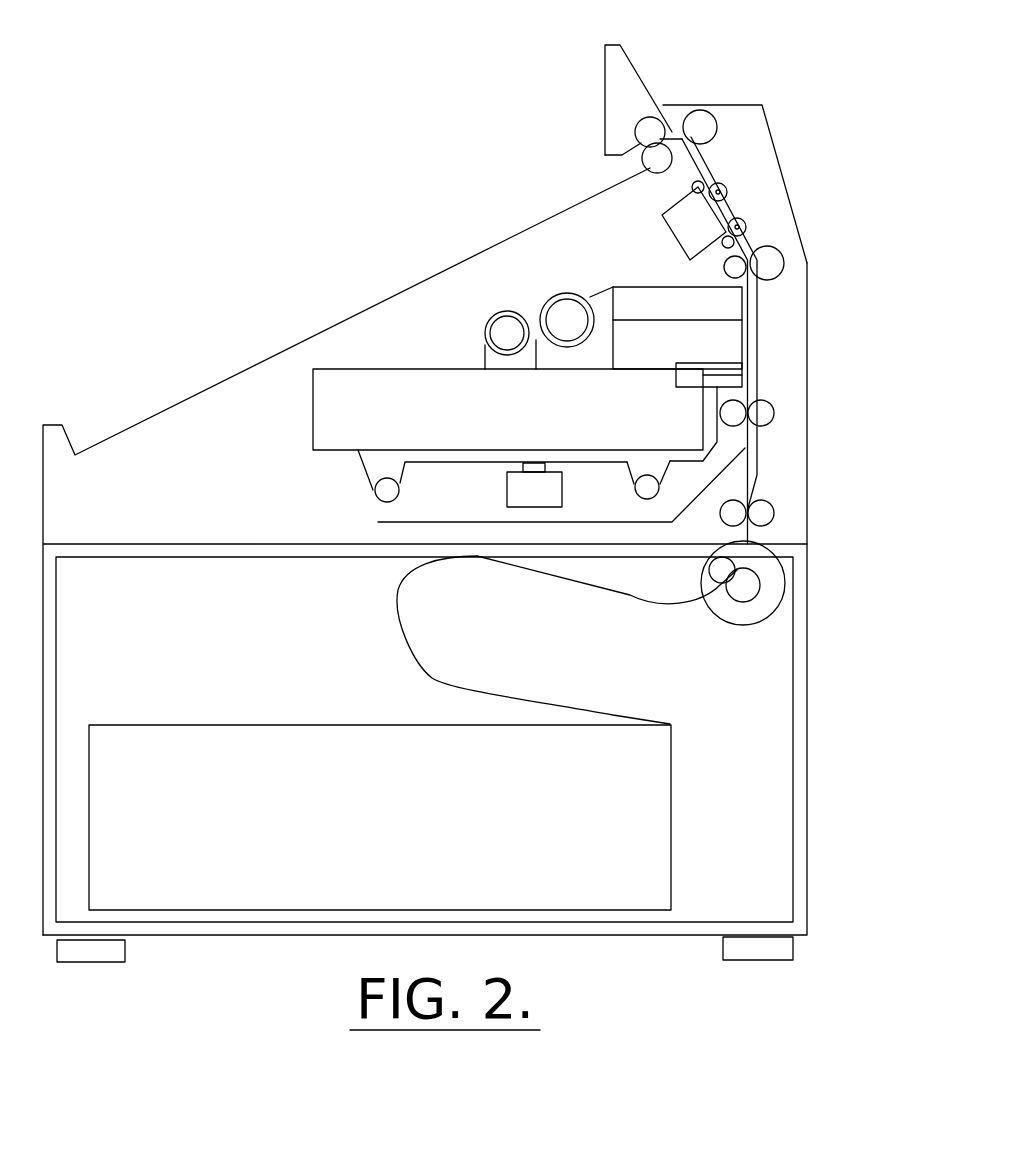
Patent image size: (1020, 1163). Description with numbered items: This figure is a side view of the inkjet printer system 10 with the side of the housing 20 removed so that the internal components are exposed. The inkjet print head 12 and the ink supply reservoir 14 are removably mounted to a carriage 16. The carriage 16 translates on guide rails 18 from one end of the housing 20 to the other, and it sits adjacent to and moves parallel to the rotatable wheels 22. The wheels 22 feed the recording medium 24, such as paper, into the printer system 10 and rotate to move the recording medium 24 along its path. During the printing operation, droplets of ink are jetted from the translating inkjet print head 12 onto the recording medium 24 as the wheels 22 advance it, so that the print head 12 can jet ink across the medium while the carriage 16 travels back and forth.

The inkjet printer system 10 is at (303, 205).
The inkjet print head 12 is at (660, 277).
The ink supply reservoir 14 is at (350, 383).
The carriage 16 is at (650, 463).
The guide rails 18 is at (500, 488).
The housing 20 is at (730, 122).
The rotatable wheels 22 is at (723, 142).
The recording medium 24 is at (617, 712).